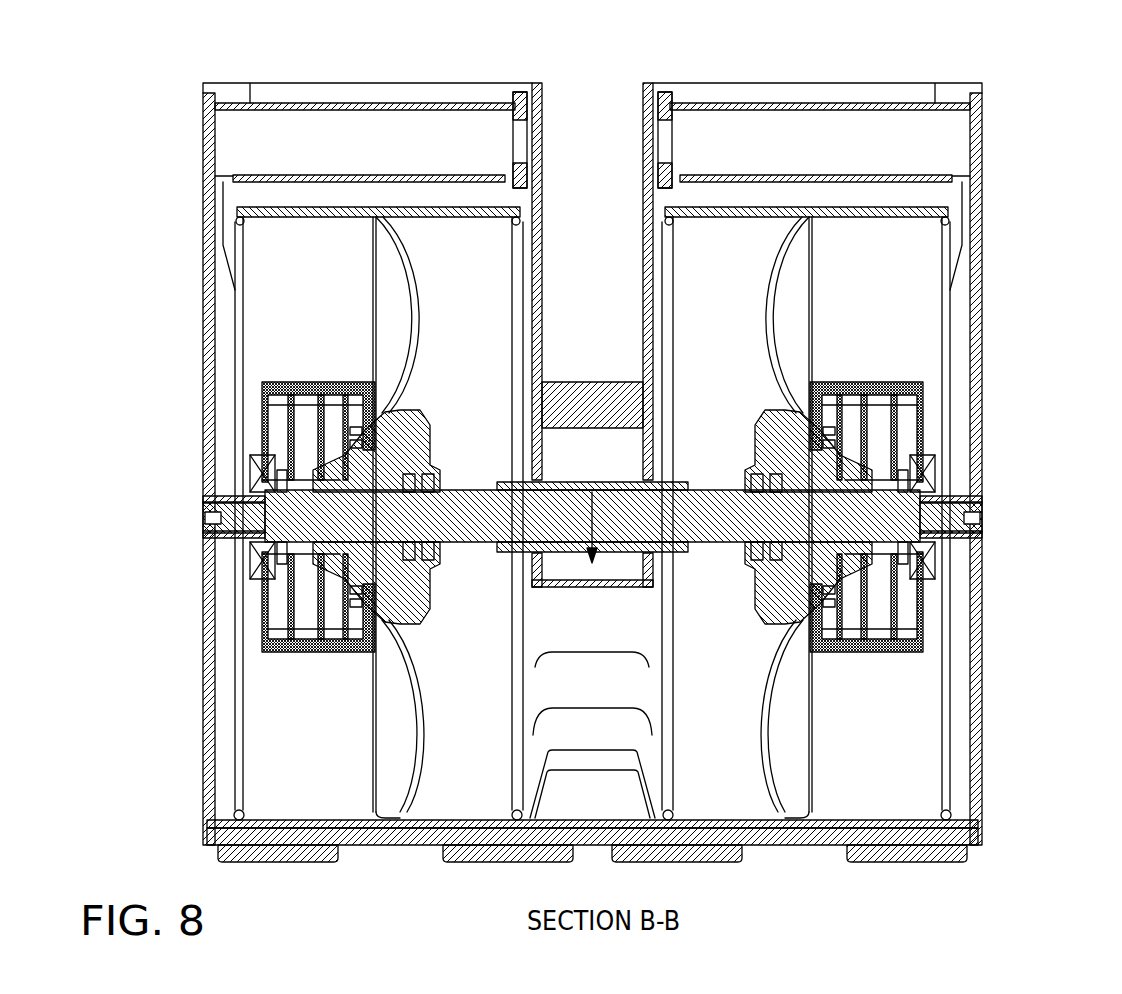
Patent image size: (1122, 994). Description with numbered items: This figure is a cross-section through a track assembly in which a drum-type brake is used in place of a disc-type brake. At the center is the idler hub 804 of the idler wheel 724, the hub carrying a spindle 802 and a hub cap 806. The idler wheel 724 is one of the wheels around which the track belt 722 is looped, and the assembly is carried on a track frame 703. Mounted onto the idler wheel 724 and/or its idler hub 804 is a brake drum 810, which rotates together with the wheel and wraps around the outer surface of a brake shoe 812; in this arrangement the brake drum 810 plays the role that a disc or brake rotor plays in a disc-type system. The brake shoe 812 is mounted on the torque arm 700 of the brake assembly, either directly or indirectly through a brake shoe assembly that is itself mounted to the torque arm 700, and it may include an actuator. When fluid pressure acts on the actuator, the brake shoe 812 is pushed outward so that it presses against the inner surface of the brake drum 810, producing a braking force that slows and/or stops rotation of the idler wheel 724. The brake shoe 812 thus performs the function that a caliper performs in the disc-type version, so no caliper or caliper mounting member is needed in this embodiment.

The torque arm 700 is at (398, 101).
The track frame 703 is at (643, 243).
The track belt 722 is at (393, 862).
The idler wheel 724 is at (232, 712).
The spindle 802 is at (517, 534).
The idler hub 804 is at (400, 453).
The hub cap 806 is at (305, 555).
The brake drum 810 is at (318, 382).
The brake shoe 812 is at (262, 413).